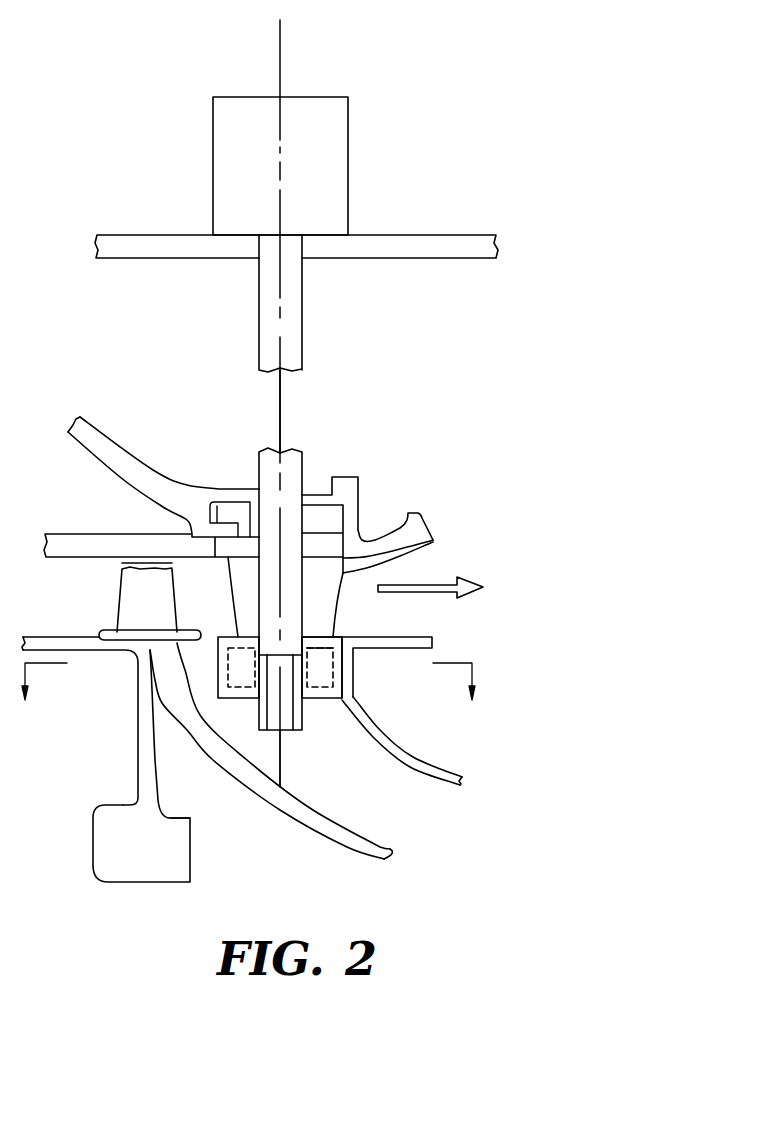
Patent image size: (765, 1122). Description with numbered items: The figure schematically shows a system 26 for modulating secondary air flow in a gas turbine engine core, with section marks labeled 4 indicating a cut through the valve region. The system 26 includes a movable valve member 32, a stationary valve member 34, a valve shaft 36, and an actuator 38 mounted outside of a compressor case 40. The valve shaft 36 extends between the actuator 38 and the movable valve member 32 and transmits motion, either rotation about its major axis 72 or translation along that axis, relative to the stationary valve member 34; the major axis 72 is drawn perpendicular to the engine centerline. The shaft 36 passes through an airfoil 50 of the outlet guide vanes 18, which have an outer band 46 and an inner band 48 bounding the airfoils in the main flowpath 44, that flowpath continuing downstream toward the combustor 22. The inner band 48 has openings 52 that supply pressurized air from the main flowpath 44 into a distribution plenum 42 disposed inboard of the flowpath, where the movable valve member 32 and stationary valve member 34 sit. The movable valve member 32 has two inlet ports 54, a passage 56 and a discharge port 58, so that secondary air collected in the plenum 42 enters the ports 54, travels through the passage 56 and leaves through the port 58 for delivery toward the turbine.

The outlet guide vanes 18 is at (224, 462).
The combustor 22 is at (141, 860).
The system for modulating secondary air flow 26 is at (590, 108).
The movable valve member 32 is at (303, 716).
The stationary valve member 34 is at (230, 714).
The valve shaft 36 is at (302, 322).
The actuator 38 is at (348, 163).
The compressor case 40 is at (447, 235).
The distribution plenum 42 is at (222, 683).
The main flowpath 44 is at (415, 592).
The outer band 46 is at (240, 557).
The inner band 48 is at (237, 633).
The airfoil 50 is at (433, 548).
The openings 52 is at (327, 636).
The inlet ports 54 is at (325, 700).
The passage 56 is at (268, 704).
The discharge port 58 is at (285, 735).
The major axis 72 is at (282, 403).
The section line 4- 4 is at (251, 698).